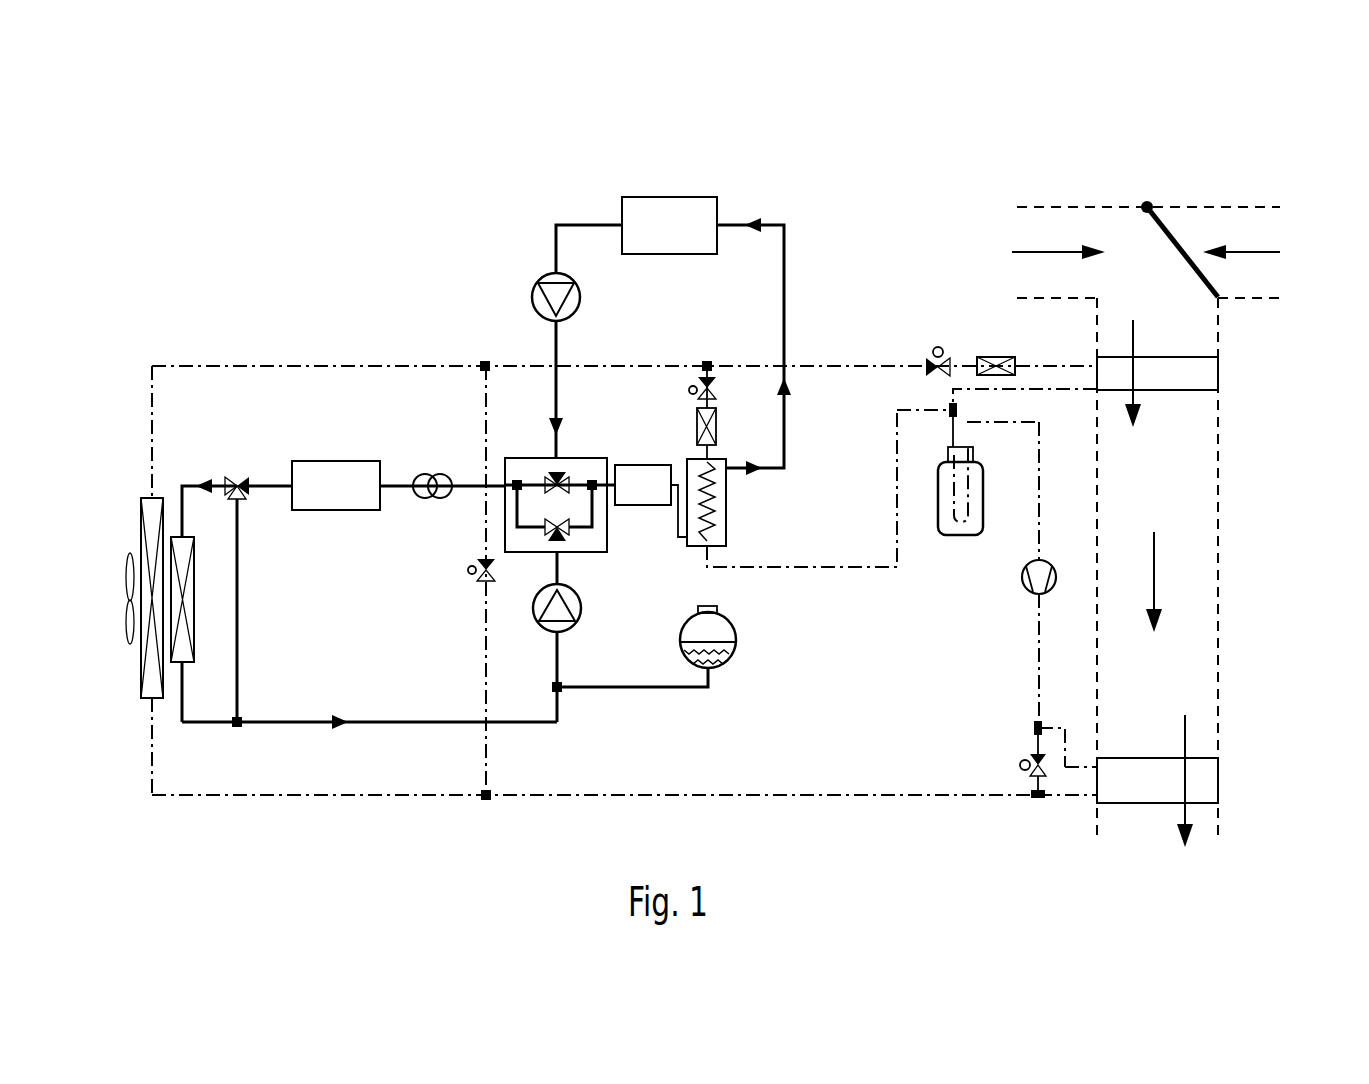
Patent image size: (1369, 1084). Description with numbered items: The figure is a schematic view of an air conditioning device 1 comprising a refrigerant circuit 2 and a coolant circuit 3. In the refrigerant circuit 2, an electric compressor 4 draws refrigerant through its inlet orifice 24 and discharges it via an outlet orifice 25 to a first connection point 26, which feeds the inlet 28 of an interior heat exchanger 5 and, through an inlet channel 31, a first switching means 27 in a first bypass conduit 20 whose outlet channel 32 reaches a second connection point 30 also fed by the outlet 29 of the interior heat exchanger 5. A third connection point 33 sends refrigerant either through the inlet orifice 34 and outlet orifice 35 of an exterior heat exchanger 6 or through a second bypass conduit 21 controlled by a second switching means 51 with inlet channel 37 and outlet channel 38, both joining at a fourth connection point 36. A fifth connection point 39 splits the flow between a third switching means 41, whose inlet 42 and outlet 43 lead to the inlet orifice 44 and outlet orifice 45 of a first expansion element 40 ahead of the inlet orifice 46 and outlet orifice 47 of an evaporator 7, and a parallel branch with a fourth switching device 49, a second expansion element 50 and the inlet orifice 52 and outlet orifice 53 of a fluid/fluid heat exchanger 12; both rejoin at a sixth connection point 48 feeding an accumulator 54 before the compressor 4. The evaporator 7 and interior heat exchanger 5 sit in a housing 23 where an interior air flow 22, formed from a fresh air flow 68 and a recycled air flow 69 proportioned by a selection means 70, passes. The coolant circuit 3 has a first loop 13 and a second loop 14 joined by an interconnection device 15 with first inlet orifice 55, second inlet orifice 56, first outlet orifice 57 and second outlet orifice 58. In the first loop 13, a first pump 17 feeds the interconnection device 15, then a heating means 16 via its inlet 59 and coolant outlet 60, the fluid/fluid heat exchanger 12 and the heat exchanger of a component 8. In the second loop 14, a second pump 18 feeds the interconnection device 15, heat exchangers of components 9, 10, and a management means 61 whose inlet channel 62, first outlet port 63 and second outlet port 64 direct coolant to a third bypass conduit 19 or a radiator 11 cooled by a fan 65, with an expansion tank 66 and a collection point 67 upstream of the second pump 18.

The air conditioning device 1 is at (300, 205).
The refrigerant circuit 2 is at (990, 652).
The coolant circuit 3 is at (585, 705).
The compressor 4 is at (1020, 580).
The interior heat exchanger 5 is at (1157, 781).
The exterior heat exchanger 6 is at (150, 690).
The evaporator 7 is at (1157, 373).
The component 8 is at (669, 225).
The component 9 is at (432, 474).
The component 10 is at (332, 485).
The radiator 11 is at (187, 650).
The fluid/fluid heat exchanger 12 is at (727, 515).
The first loop 13 is at (784, 295).
The second loop 14 is at (380, 722).
The interconnection device 15 is at (565, 458).
The means for heating the coolant 16 is at (643, 485).
The first pump 17 is at (540, 282).
The second pump 18 is at (580, 625).
The third bypass conduit 19 is at (237, 621).
The first bypass conduit 20 is at (1018, 780).
The second bypass conduit 21 is at (488, 752).
The interior air flow 22 is at (1156, 573).
The housing 23 is at (1218, 463).
The inlet orifice 24 is at (1042, 560).
The outlet orifice 25 is at (1042, 597).
The first connection point 26 is at (1045, 726).
The first switching means 27 is at (1018, 752).
The inlet 28 is at (1097, 760).
The outlet 29 is at (1097, 798).
The second connection point 30 is at (1035, 800).
The inlet channel 31 is at (1036, 756).
The outlet channel 32 is at (1046, 780).
The third connection point 33 is at (486, 800).
The inlet orifice 34 is at (153, 700).
The outlet orifice 35 is at (152, 498).
The fourth connection point 36 is at (485, 360).
The inlet channel 37 is at (483, 582).
The outlet channel 38 is at (480, 562).
The fifth connection point 39 is at (707, 360).
The first expansion element 40 is at (997, 357).
The third switching means 41 is at (936, 347).
The inlet 42 is at (927, 366).
The outlet 43 is at (952, 366).
The inlet orifice 44 is at (953, 375).
The outlet orifice 45 is at (1022, 366).
The inlet orifice 46 is at (1097, 366).
The outlet orifice 47 is at (1097, 392).
The sixth connection point 48 is at (957, 410).
The fourth switching device 49 is at (712, 385).
The second expansion element 50 is at (697, 427).
The second switching means 51 is at (450, 570).
The inlet orifice 52 is at (707, 457).
The outlet orifice 53 is at (707, 548).
The accumulator 54 is at (945, 538).
The first inlet orifice 55 is at (554, 470).
The second inlet orifice 56 is at (560, 555).
The first outlet orifice 57 is at (505, 482).
The second outlet orifice 58 is at (606, 468).
The inlet 59 is at (614, 470).
The coolant outlet 60 is at (668, 475).
The means for managing the circulation of coolant 61 is at (236, 476).
The inlet channel 62 is at (249, 482).
The first outlet port 63 is at (240, 500).
The second outlet port 64 is at (225, 482).
The fan 65 is at (127, 577).
The expansion tank 66 is at (737, 658).
The collection point 67 is at (238, 727).
The fresh air flow 68 is at (1248, 251).
The recycled air flow 69 is at (1040, 252).
The selection means 70 is at (1180, 242).